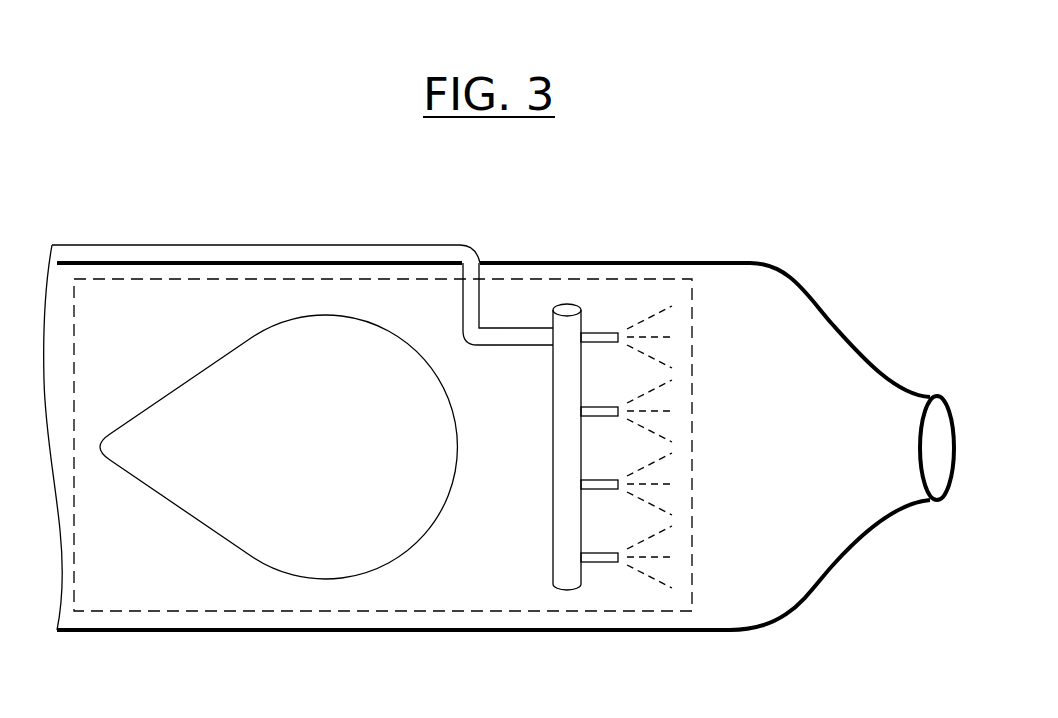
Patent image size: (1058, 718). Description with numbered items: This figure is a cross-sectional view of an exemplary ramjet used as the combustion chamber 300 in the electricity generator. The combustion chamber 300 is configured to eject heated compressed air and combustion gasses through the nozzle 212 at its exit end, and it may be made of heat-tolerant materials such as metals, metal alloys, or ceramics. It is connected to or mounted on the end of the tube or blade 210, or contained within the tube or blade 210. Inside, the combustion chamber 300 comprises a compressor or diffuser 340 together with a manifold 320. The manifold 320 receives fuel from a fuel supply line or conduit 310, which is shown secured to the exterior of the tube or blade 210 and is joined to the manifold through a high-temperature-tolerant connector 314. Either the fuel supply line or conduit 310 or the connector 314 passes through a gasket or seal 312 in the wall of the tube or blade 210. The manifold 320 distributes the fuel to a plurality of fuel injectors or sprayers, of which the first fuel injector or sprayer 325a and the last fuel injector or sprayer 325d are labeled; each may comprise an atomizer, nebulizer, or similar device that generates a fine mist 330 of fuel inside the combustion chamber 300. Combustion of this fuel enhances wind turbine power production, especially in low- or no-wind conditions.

The tube or blade 210 is at (228, 632).
The nozzle 212 is at (940, 418).
The combustion chamber 300 is at (697, 444).
The fuel supply line or conduit 310 is at (246, 243).
The gasket or seal 312 is at (480, 262).
The connector 314 is at (506, 348).
The manifold 320 is at (553, 500).
The fuel injector or sprayer 325a is at (603, 332).
The fuel injector or sprayer 325d is at (608, 563).
The fine mist 330 is at (670, 498).
The compressor or diffuser 340 is at (336, 457).